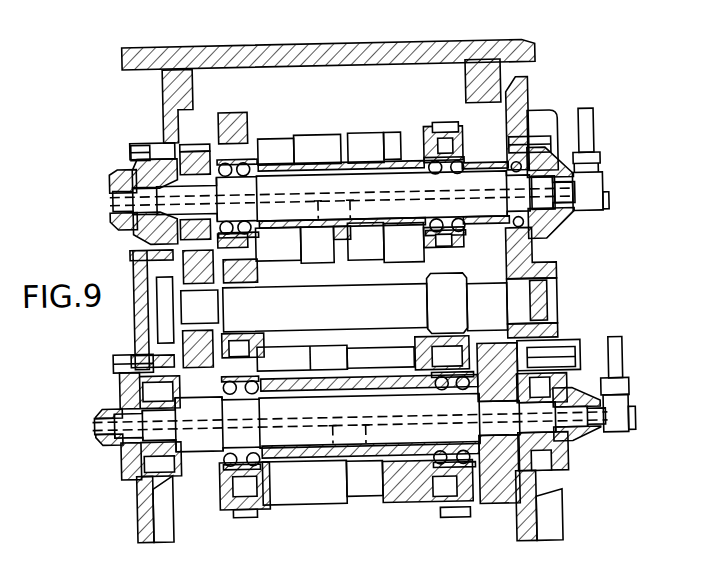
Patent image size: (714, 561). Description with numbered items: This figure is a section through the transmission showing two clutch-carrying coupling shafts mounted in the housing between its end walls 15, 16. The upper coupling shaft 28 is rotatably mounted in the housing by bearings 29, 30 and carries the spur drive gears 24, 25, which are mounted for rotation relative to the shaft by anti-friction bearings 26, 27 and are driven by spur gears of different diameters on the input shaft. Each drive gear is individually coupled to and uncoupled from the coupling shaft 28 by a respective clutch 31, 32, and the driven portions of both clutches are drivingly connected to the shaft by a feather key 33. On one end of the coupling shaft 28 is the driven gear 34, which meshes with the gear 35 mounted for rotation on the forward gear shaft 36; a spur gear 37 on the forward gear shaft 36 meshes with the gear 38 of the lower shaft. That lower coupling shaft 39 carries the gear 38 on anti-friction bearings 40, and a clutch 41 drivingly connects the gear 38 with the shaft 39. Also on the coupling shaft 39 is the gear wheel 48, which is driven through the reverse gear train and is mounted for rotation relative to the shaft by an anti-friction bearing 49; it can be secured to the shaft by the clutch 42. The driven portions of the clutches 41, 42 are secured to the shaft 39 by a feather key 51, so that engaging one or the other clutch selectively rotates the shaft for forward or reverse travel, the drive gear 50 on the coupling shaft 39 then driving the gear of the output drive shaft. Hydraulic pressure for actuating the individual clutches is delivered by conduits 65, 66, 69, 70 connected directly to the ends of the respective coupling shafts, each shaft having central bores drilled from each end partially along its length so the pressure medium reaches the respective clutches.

The end wall 15 is at (176, 84).
The end wall 16 is at (531, 83).
The gear 24 is at (234, 109).
The gear 25 is at (444, 125).
The anti-friction bearing 26 is at (259, 160).
The anti-friction bearing 27 is at (461, 169).
The coupling shaft 28 is at (270, 216).
The bearing 29 is at (170, 168).
The bearing 30 is at (499, 233).
The clutch 31 is at (317, 139).
The clutch 32 is at (366, 138).
The feather key 33 is at (386, 168).
The driven gear 34 is at (191, 146).
The gear 35 is at (190, 334).
The forward gear shaft 36 is at (267, 293).
The spur gear 37 is at (460, 279).
The gear 38 is at (449, 515).
The coupling shaft 39 is at (282, 441).
The anti-friction bearing 40 is at (431, 379).
The clutch 41 is at (389, 504).
The clutch 42 is at (288, 501).
The gear wheel 48 is at (238, 508).
The anti-friction bearing 49 is at (220, 457).
The drive gear 50 is at (496, 500).
The feather key 51 is at (278, 396).
The conduit 65 is at (590, 145).
The conduit 66 is at (114, 197).
The conduit 69 is at (619, 365).
The conduit 70 is at (92, 419).